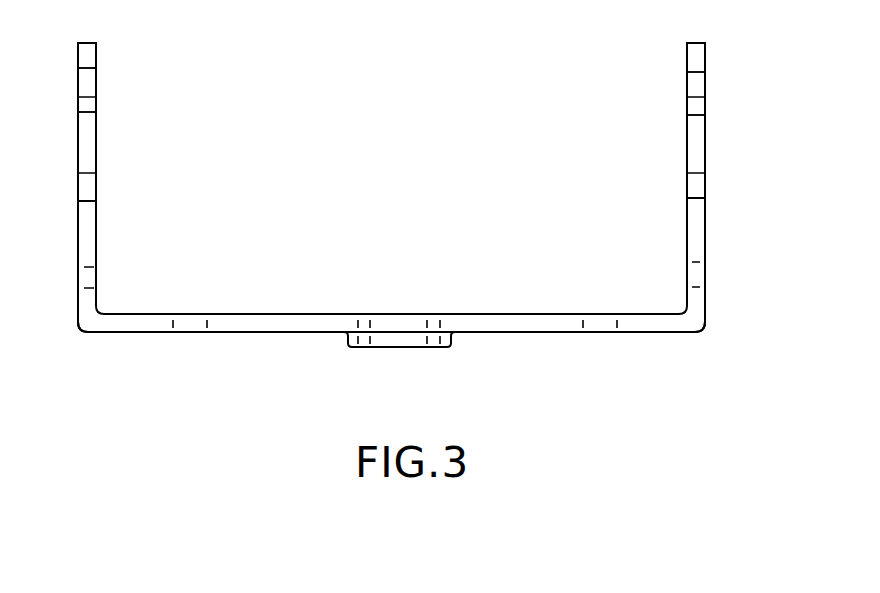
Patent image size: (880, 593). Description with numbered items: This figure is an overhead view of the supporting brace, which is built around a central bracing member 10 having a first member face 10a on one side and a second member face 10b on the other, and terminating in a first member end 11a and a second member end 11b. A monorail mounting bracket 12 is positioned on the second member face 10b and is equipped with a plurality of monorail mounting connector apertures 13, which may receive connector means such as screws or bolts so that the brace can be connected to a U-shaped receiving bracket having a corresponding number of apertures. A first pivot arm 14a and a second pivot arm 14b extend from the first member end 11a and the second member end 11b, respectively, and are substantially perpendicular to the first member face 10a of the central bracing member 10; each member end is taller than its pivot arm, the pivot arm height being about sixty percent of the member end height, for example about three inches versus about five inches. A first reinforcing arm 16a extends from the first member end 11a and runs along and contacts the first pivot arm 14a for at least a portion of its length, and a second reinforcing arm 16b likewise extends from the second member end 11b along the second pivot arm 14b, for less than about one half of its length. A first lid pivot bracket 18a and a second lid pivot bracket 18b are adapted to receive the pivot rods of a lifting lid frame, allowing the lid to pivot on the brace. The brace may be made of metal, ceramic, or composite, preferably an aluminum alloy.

The central bracing member 10 is at (257, 341).
The first member face 10a is at (305, 313).
The second member face 10b is at (517, 333).
The first member end 11a is at (76, 341).
The second member end 11b is at (710, 341).
The monorail mounting bracket 12 is at (400, 350).
The monorail mounting connector apertures 13 is at (437, 350).
The first pivot arm 14a is at (97, 56).
The second pivot arm 14b is at (686, 60).
The first reinforcing arm 16a is at (80, 253).
The second reinforcing arm 16b is at (706, 247).
The first lid pivot bracket 18a is at (86, 82).
The second lid pivot bracket 18b is at (690, 88).